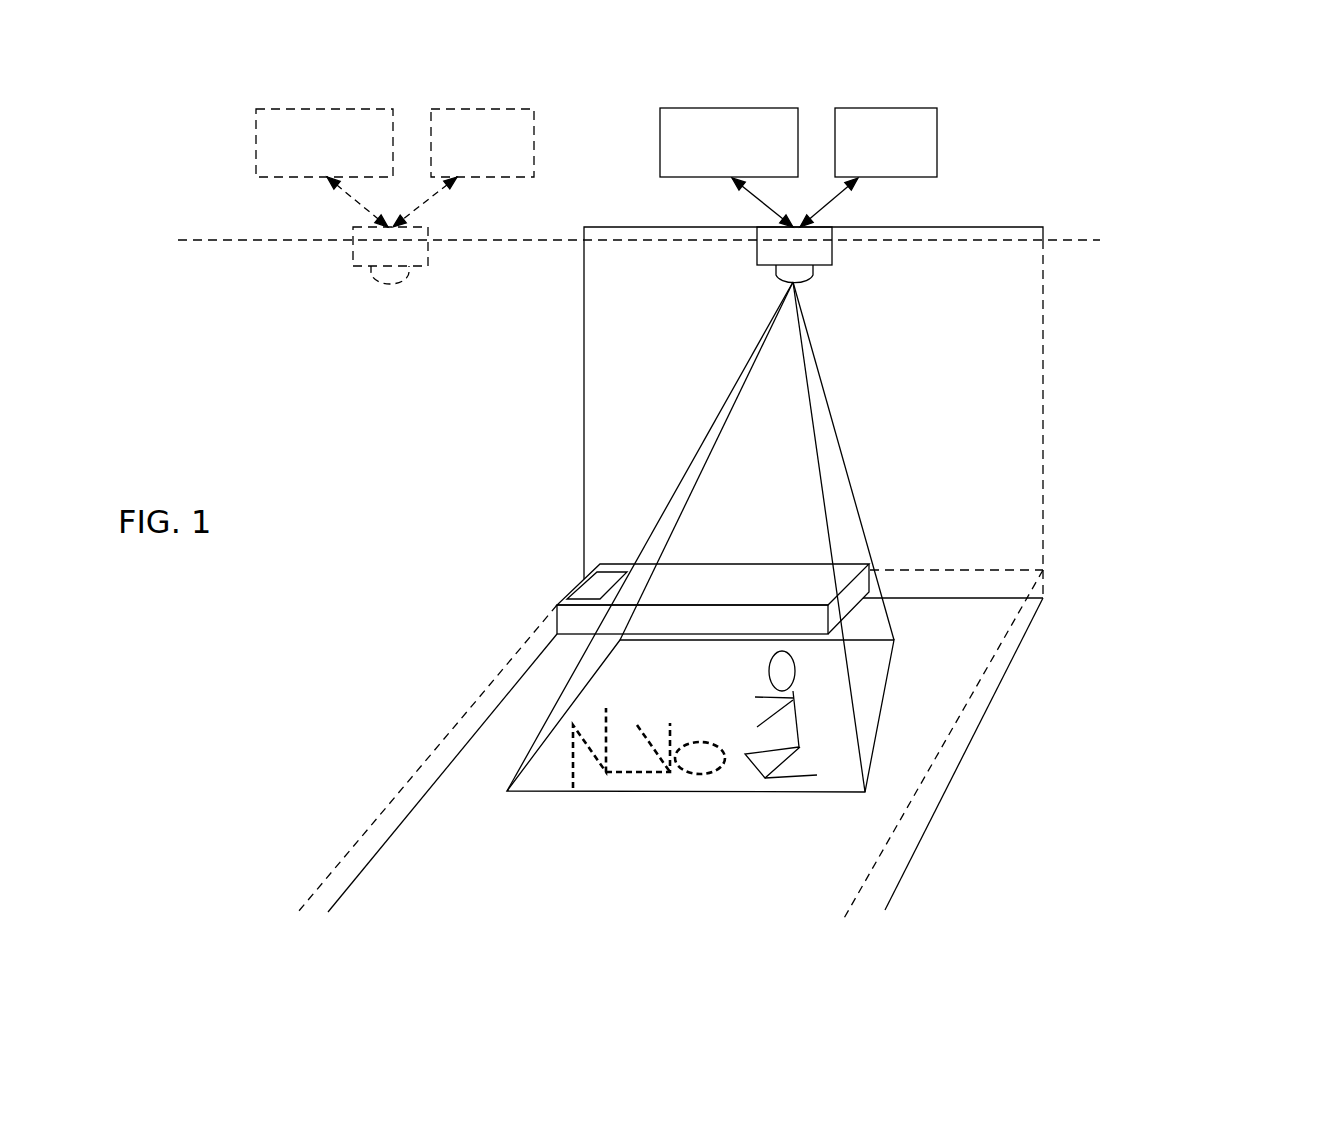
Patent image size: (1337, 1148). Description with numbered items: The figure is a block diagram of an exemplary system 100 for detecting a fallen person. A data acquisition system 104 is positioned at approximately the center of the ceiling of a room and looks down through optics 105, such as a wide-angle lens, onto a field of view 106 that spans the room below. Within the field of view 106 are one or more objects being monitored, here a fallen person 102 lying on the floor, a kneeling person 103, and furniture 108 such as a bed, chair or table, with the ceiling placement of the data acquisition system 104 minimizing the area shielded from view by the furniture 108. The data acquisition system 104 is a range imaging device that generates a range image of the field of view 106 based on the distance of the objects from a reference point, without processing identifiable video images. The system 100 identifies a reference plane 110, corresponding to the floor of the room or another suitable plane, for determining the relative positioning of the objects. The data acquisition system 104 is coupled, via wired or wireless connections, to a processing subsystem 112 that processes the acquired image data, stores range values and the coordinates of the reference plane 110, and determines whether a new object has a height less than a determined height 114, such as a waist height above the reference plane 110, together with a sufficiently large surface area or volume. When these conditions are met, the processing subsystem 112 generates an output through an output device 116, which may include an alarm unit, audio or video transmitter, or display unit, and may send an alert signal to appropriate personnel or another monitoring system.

The system 100 is at (1200, 122).
The fallen person 102 is at (675, 732).
The kneeling person 103 is at (800, 727).
The data acquisition system 104 is at (832, 258).
The optics 105 is at (806, 280).
The field of view 106 is at (687, 810).
The furniture 108 is at (729, 594).
The reference plane 110 is at (489, 870).
The processing subsystem 112 is at (660, 142).
The determined height 114 is at (957, 568).
The output device 116 is at (937, 140).